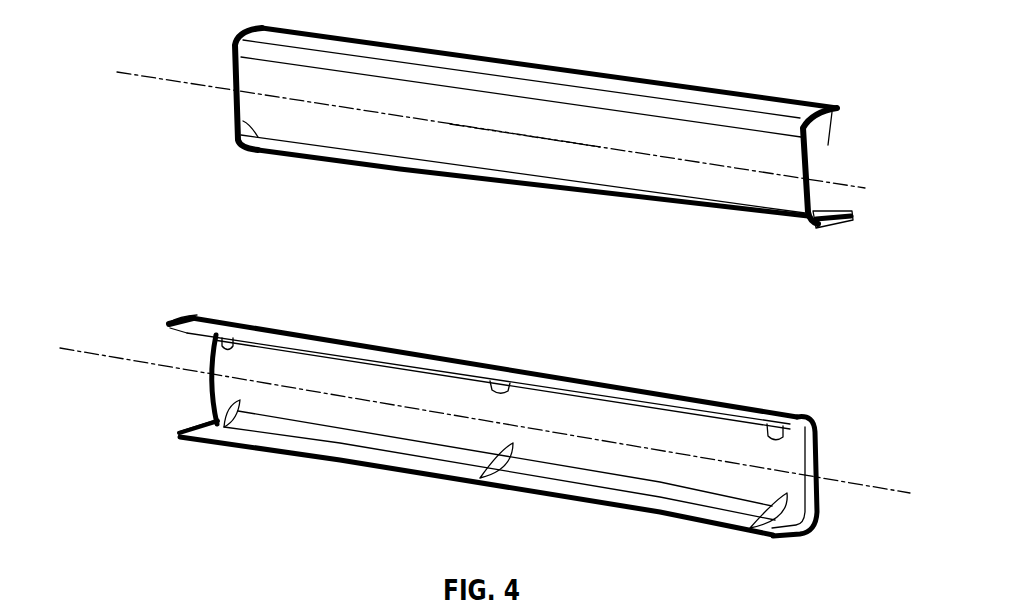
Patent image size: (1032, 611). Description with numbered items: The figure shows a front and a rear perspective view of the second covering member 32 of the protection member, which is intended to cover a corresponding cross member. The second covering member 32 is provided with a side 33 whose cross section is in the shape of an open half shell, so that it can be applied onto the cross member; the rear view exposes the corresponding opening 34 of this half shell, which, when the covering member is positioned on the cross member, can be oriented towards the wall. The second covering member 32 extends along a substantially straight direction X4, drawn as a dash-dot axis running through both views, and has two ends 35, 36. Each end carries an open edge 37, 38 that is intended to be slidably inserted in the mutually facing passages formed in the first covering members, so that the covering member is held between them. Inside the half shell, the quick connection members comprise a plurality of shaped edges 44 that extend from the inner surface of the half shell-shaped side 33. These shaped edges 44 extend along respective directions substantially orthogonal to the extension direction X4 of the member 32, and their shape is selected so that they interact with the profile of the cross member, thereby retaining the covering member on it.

The second covering member 32 is at (683, 86).
The side 33 is at (528, 148).
The opening 34 is at (833, 205).
The end 35 is at (795, 415).
The end 36 is at (258, 148).
The open edge 37 is at (826, 144).
The open edge 38 is at (232, 62).
The shaped edges 44 is at (233, 350).
The straight direction X4 is at (485, 266).